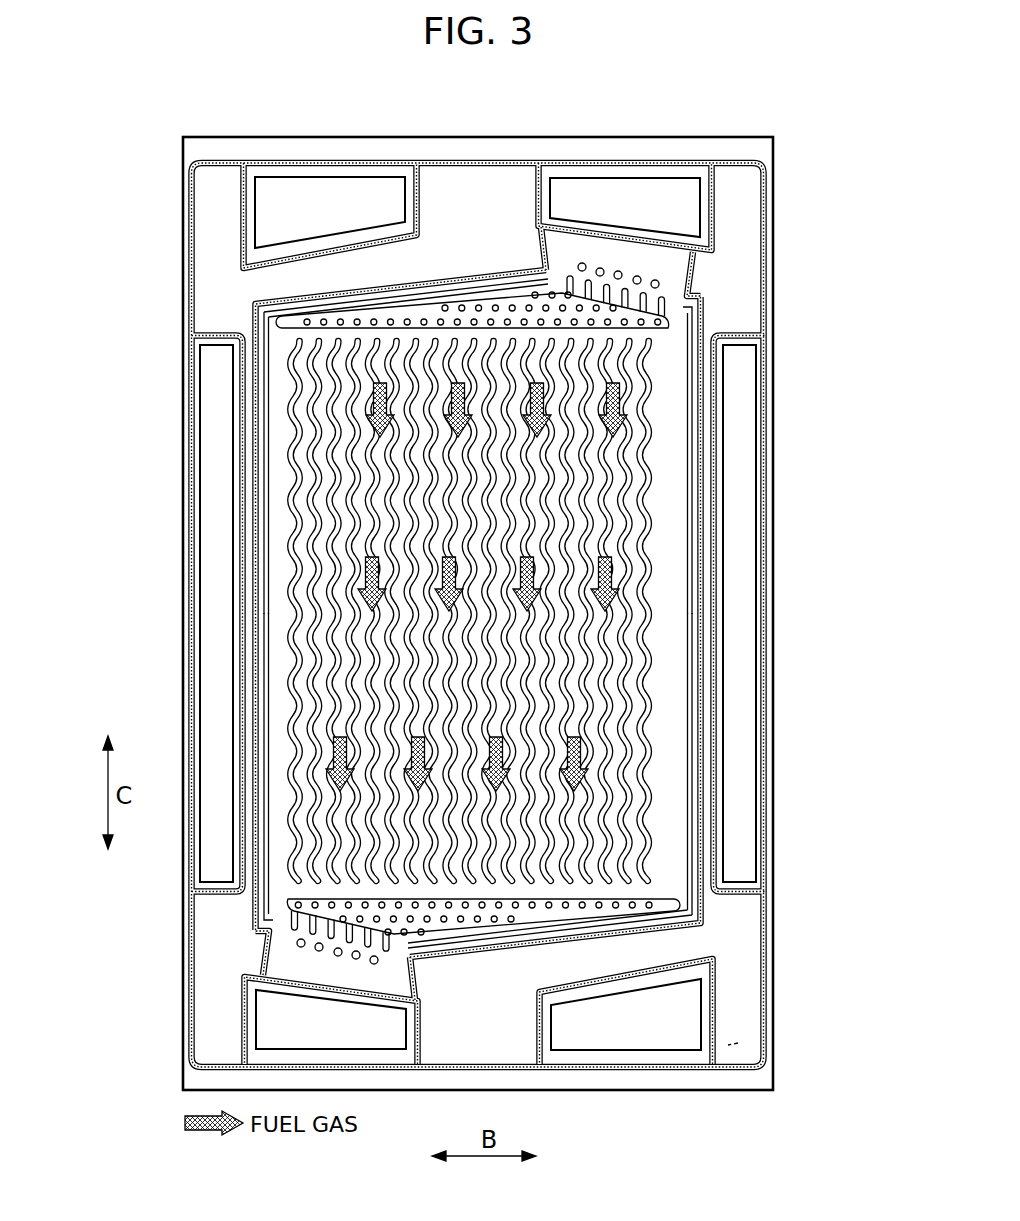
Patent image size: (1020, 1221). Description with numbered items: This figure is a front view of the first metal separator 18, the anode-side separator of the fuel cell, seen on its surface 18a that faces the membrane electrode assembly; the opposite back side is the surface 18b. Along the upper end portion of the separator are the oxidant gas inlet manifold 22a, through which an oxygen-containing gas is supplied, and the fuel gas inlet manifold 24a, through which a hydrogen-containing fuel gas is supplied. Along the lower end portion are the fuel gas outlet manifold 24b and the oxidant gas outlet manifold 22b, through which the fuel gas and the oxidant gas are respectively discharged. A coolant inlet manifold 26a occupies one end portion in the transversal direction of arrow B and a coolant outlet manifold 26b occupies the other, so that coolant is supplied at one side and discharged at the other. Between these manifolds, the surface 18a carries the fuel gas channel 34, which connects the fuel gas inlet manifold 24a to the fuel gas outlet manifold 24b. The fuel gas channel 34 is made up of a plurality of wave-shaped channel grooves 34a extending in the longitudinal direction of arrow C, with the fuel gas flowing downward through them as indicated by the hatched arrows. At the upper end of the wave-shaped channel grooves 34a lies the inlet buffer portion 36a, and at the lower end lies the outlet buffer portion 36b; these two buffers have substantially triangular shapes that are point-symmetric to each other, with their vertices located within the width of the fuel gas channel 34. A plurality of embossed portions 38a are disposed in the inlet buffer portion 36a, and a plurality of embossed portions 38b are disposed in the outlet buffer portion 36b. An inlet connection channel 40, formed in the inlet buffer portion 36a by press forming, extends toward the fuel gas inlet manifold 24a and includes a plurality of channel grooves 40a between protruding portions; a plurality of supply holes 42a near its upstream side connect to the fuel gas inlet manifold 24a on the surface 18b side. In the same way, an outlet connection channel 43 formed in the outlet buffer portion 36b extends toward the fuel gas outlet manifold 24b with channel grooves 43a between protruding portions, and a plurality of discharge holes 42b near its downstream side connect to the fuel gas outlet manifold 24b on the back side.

The first metal separator 18 is at (538, 80).
The surface 18a is at (738, 1009).
The surface 18b is at (738, 1043).
The oxidant gas inlet manifold 22a is at (350, 182).
The oxidant gas outlet manifold 22b is at (671, 1050).
The fuel gas inlet manifold 24a is at (682, 182).
The fuel gas outlet manifold 24b is at (262, 1020).
The coolant inlet manifold 26a is at (206, 555).
The coolant outlet manifold 26b is at (750, 555).
The fuel gas channel 34 is at (550, 613).
The wave-shaped channel grooves 34a is at (606, 805).
The inlet buffer portion 36a is at (472, 269).
The outlet buffer portion 36b is at (483, 960).
The embossed portions 38a is at (479, 305).
The embossed portions 38b is at (511, 922).
The inlet connection channel 40 is at (699, 252).
The channel grooves 40a is at (633, 296).
The supply holes 42a is at (600, 268).
The discharge holes 42b is at (373, 967).
The outlet connection channel 43 is at (258, 979).
The channel grooves 43a is at (320, 957).